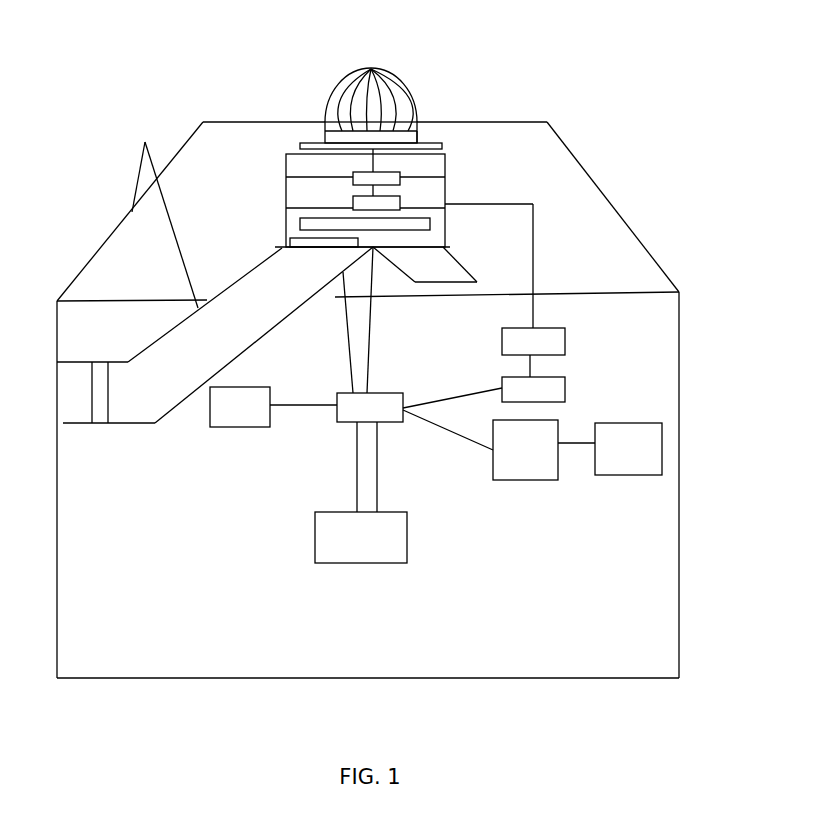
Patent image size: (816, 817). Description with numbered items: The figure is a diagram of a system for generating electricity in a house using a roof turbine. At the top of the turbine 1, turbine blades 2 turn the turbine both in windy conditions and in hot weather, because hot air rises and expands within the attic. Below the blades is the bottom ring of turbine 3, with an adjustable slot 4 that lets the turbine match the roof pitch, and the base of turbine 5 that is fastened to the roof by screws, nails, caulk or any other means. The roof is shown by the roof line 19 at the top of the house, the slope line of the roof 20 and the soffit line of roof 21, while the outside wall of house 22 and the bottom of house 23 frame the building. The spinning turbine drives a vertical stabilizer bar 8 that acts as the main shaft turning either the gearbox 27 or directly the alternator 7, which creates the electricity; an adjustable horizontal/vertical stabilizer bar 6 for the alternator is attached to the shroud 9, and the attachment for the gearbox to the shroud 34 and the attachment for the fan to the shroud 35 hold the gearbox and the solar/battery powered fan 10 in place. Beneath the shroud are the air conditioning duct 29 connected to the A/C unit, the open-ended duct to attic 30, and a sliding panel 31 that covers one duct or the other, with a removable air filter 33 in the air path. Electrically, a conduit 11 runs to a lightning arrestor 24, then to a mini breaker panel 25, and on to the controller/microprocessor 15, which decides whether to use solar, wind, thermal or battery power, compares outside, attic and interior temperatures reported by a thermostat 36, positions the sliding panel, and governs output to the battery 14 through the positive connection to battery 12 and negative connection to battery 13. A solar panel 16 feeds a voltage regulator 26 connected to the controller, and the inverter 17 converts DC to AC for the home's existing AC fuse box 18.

The top of the turbine 1 is at (376, 68).
The turbine blade 2 is at (405, 88).
The bottom ring of turbine 3 is at (418, 128).
The adjustable slot 4 is at (423, 137).
The base of turbine 5 is at (436, 142).
The adjustable horizontal/vertical stabilizer bar 6 is at (286, 200).
The alternator 7 is at (400, 202).
The vertical stabilizer bar (main shaft) 8 is at (350, 159).
The shroud 9 is at (300, 222).
The solar/battery powered fan 10 is at (446, 222).
The conduit 11 is at (166, 244).
The positive connection to battery 12 is at (355, 462).
The negative connection to battery 13 is at (380, 474).
The battery 14 is at (362, 565).
The controller/microprocessor 15 is at (392, 393).
The solar panel 16 is at (140, 170).
The inverter 17 is at (560, 425).
The AC fuse box 18 is at (628, 422).
The roof line 19 is at (250, 121).
The slope line of the roof 20 is at (592, 170).
The soffit line of roof 21 is at (584, 291).
The outside wall of house 22 is at (55, 463).
The bottom of house 23 is at (362, 680).
The lightning arrestor 24 is at (568, 336).
The mini breaker panel 25 is at (568, 386).
The voltage regulator 26 is at (228, 428).
The gearbox 27 is at (400, 178).
The air conditioning duct 29 is at (352, 190).
The duct to attic 30 is at (430, 228).
The sliding panel 31 is at (316, 250).
The removable air filter 33 is at (100, 415).
The attachment for the gearbox to the shroud 34 is at (286, 170).
The attachment for the fan to the shroud 35 is at (286, 240).
The thermostat 36 is at (344, 334).